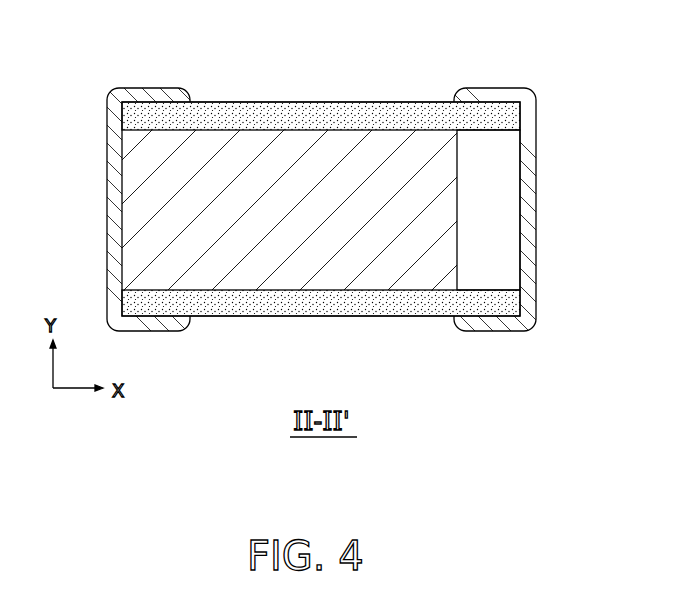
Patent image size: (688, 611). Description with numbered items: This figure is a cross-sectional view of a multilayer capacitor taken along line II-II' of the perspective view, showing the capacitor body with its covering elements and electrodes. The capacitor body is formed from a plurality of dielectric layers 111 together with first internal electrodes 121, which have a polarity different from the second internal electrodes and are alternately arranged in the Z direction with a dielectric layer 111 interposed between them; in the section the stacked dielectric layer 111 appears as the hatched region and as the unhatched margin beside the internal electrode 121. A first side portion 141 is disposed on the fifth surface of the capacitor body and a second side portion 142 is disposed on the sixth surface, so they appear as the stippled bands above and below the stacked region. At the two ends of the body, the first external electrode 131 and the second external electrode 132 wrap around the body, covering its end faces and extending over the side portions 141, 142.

The dielectric layer 111 is at (510, 212).
The first internal electrode 121 is at (135, 212).
The first external electrode 131 is at (152, 88).
The second external electrode 132 is at (493, 88).
The first side portion 141 is at (255, 100).
The second side portion 142 is at (255, 318).